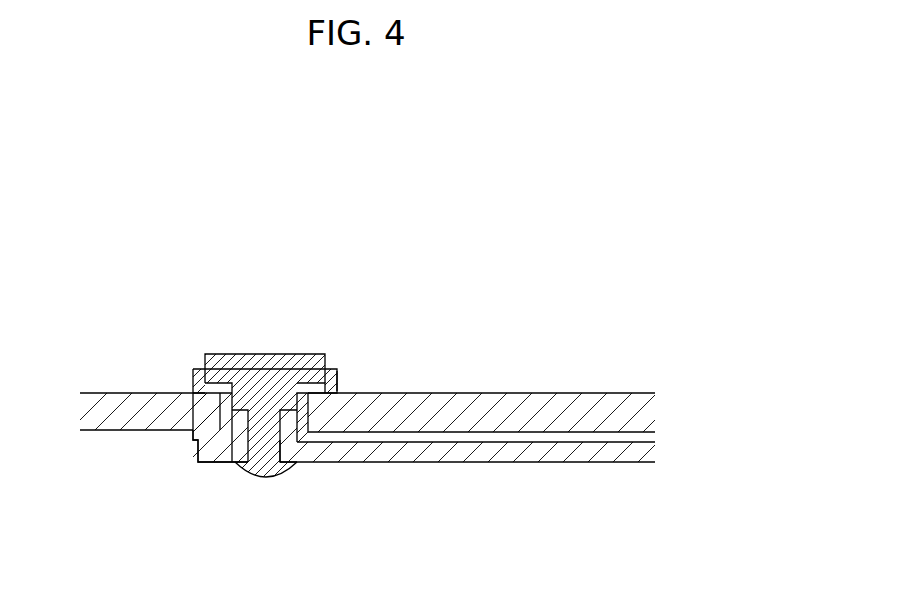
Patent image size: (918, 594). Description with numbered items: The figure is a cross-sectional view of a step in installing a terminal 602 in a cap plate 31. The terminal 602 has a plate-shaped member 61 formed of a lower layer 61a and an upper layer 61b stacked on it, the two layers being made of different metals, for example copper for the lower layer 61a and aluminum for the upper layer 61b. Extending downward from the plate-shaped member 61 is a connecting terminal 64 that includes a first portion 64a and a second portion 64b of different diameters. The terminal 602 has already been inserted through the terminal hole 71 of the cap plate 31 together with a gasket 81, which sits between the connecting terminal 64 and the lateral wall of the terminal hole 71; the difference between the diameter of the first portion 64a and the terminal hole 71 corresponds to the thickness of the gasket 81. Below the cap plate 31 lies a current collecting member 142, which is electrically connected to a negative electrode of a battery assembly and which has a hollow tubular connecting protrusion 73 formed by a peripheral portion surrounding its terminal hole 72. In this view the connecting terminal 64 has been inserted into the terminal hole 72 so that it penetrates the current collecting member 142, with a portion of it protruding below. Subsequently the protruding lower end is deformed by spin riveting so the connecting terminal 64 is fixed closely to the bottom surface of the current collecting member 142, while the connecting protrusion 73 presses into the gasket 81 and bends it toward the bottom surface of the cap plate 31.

The terminal 602 is at (200, 232).
The connecting terminal 64 is at (128, 268).
The first portion 64a is at (223, 400).
The second portion 64b is at (245, 448).
The plate-shaped member 61 is at (240, 268).
The lower layer 61a is at (216, 368).
The upper layer 61b is at (250, 354).
The terminal hole 71 is at (292, 408).
The terminal hole 72 is at (272, 470).
The connecting protrusion 73 is at (288, 420).
The gasket 81 is at (338, 372).
The cap plate 31 is at (478, 412).
The current collecting member 142 is at (540, 455).